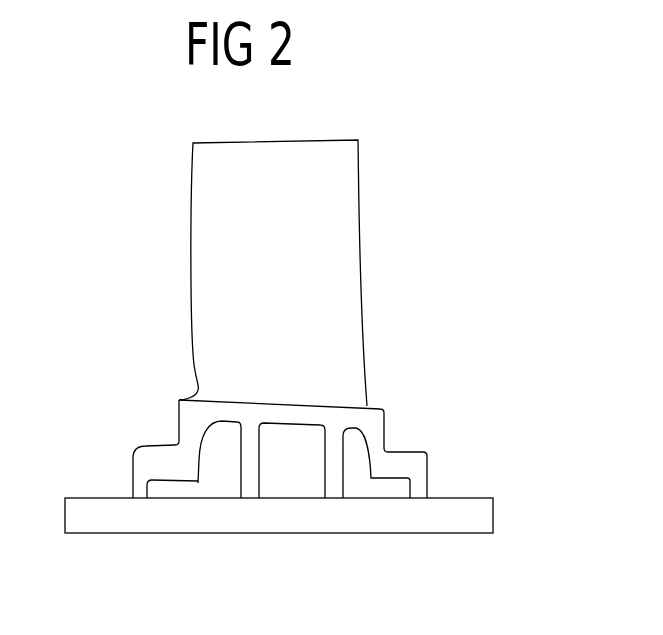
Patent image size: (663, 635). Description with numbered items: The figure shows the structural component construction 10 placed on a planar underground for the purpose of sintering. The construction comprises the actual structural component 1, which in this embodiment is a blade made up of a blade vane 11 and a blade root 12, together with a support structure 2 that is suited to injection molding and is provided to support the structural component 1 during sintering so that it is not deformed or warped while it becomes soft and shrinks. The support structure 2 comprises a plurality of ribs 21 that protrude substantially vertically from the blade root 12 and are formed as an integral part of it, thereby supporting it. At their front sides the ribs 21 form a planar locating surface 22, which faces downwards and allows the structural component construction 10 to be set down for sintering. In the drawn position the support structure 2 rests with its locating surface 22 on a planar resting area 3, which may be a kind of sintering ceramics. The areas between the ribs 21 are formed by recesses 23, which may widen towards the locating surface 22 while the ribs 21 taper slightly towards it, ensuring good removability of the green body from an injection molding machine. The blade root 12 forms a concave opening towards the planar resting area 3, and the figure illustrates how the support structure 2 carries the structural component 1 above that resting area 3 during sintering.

The structural component construction 10 is at (403, 145).
The structural component 1 is at (169, 282).
The blade vane 11 is at (337, 265).
The blade root 12 is at (342, 417).
The support structure 2 is at (148, 462).
The ribs 21 is at (250, 468).
The locating surface 22 is at (245, 516).
The recesses 23 is at (312, 482).
The planar resting area 3 is at (165, 520).